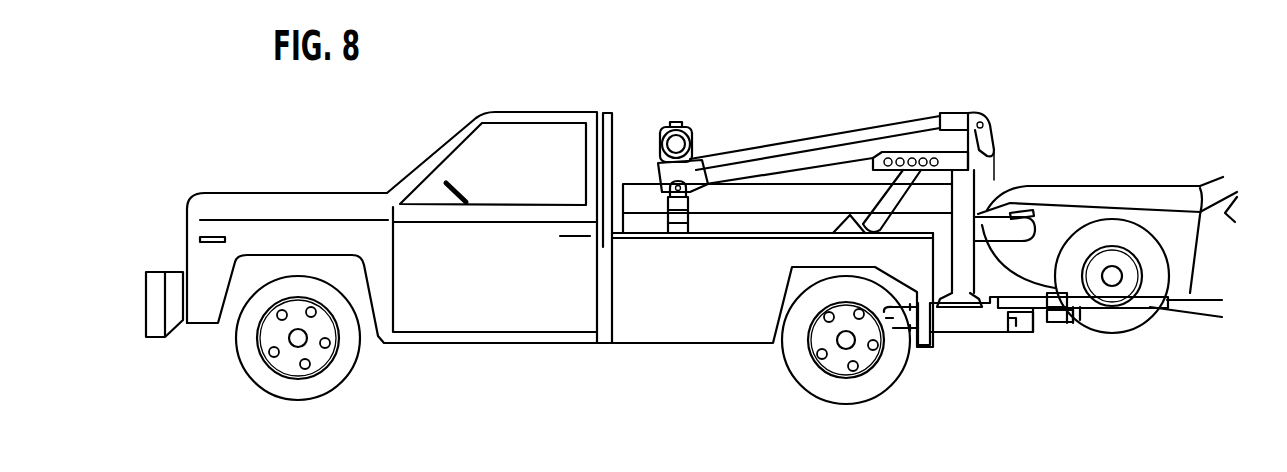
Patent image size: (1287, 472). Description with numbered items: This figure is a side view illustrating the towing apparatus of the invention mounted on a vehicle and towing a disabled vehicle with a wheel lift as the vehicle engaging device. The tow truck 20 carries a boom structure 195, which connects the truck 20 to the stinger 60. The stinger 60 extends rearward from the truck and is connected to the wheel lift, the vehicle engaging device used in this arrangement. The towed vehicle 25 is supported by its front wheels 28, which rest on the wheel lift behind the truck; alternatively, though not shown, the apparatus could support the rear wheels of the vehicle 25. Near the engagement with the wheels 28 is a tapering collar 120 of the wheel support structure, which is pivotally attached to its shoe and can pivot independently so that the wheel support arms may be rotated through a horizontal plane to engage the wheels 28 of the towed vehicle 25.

The truck 20 is at (547, 104).
The boom structure 195 is at (789, 134).
The vehicle 25 is at (1181, 176).
The front wheels 28 is at (1110, 332).
The stinger 60 is at (988, 342).
The collar 120 is at (1072, 323).